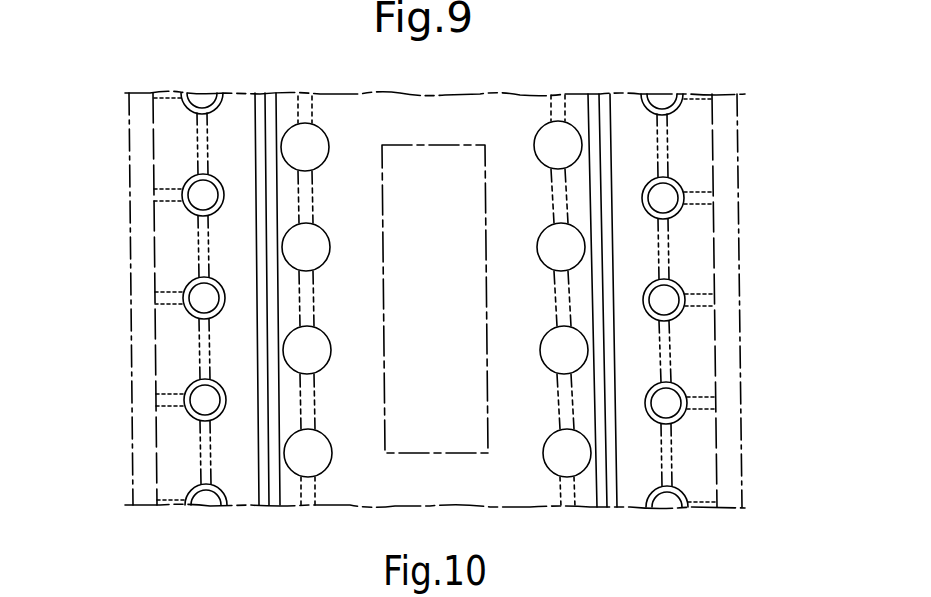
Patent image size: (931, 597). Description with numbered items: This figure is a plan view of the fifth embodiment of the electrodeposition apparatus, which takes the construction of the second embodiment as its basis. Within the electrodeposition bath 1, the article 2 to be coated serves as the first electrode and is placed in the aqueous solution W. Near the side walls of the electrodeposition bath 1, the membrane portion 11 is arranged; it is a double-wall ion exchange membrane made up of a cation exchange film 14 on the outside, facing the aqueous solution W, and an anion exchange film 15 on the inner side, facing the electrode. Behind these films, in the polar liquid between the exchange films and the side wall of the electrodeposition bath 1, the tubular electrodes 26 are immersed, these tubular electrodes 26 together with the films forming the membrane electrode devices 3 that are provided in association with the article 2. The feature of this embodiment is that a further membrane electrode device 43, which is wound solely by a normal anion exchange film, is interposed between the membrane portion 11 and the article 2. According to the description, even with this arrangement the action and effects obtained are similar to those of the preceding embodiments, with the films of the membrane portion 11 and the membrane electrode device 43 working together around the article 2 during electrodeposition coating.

The electrodeposition bath 1 is at (742, 358).
The article 2 is at (422, 453).
The membrane electrode device 3 is at (184, 206).
The membrane portion 11 is at (421, 342).
The cation exchange film 14 is at (277, 507).
The anion exchange film 15 is at (257, 507).
The tubular electrode 26 is at (184, 310).
The membrane electrode device 43 is at (326, 469).
The aqueous solution w is at (517, 120).